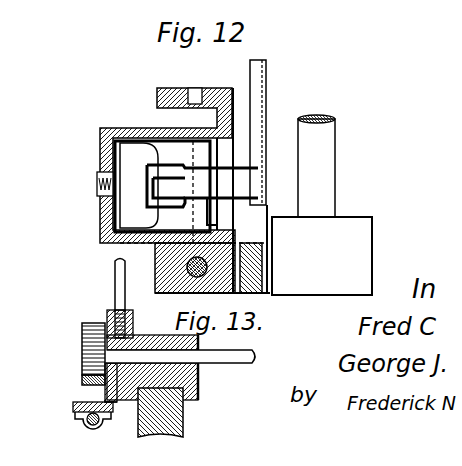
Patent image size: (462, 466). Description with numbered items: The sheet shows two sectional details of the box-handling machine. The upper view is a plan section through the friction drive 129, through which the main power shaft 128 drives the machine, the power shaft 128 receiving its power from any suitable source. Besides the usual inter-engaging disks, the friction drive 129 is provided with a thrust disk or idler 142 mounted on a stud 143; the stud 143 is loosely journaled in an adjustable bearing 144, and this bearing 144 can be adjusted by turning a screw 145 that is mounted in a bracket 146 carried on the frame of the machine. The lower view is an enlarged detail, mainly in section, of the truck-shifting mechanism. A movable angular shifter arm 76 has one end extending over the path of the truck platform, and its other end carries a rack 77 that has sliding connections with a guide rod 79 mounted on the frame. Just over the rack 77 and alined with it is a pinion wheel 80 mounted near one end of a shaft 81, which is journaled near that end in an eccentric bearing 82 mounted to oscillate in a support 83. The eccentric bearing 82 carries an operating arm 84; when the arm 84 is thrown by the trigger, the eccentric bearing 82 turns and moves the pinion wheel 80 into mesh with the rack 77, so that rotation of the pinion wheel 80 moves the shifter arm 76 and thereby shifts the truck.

In FIG. 12, the main power shaft 128 is at (317, 157).
In FIG. 12, the friction drive 129 is at (280, 112).
In FIG. 12, the thrust disk or idler 142 is at (168, 185).
In FIG. 12, the stud 143 is at (213, 217).
In FIG. 12, the adjustable bearing 144 is at (138, 152).
In FIG. 12, the screw 145 is at (96, 184).
In FIG. 12, the bracket 146 is at (105, 229).
In FIG. 13, the shifter arm 76 is at (106, 431).
In FIG. 13, the rack 77 is at (74, 410).
In FIG. 13, the guide rod 79 is at (82, 426).
In FIG. 13, the pinion wheel 80 is at (82, 341).
In FIG. 13, the shaft 81 is at (253, 362).
In FIG. 13, the eccentric bearing 82 is at (200, 378).
In FIG. 13, the support 83 is at (184, 412).
In FIG. 13, the operating arm 84 is at (115, 282).